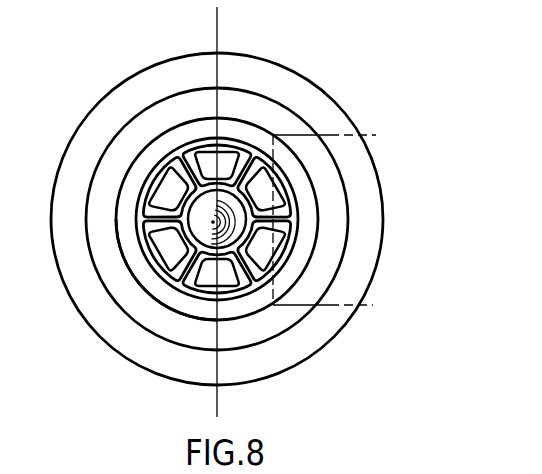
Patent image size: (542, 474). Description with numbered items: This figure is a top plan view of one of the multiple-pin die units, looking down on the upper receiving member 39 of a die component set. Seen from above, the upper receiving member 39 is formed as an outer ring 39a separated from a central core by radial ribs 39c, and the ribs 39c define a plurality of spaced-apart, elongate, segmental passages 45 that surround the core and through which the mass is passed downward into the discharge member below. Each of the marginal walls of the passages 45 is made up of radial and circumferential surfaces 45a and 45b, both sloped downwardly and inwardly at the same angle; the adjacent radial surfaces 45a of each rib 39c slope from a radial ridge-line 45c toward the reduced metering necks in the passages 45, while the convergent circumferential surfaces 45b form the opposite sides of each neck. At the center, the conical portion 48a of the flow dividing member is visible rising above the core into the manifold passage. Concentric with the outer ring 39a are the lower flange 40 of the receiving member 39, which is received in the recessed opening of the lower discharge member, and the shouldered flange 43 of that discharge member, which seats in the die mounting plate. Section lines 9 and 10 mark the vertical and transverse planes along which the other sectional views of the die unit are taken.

The section line 9- 9 is at (237, 410).
The section line 10- 10 is at (345, 222).
The upper receiving member 39 is at (270, 128).
The outer ring 39a is at (131, 283).
The radial ribs 39c is at (142, 211).
The lower flange 40 is at (288, 322).
The shouldered flange 43 is at (368, 265).
The segmental passages 45 is at (214, 282).
The radial sloped surfaces 45a is at (200, 163).
The circumferential sloped surfaces 45b is at (228, 143).
The radial ridge-line 45c is at (185, 173).
The conical portion 48a is at (204, 219).